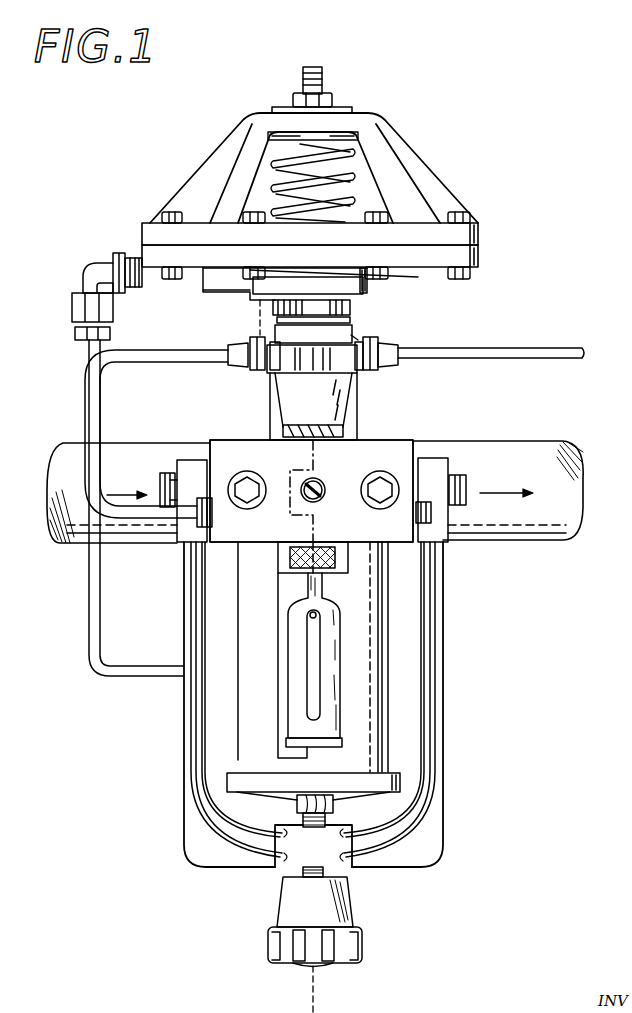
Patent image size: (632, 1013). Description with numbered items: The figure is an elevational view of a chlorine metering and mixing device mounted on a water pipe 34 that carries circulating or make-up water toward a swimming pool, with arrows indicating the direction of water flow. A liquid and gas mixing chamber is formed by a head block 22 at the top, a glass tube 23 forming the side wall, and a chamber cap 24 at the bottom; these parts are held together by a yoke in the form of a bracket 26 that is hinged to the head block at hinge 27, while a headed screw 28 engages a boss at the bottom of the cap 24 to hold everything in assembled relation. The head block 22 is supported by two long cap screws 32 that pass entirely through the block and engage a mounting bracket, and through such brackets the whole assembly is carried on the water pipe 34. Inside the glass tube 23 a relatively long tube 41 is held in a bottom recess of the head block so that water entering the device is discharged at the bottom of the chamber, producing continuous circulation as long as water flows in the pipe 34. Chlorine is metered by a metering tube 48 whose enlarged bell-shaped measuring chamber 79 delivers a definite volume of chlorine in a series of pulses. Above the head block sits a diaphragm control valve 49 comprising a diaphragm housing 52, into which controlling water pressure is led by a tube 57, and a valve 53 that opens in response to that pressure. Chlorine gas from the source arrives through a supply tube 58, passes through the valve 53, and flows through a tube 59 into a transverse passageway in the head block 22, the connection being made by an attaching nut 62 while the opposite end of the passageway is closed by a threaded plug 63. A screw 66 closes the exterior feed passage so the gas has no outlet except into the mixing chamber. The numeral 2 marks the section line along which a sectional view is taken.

The section line 2- 2 is at (257, 317).
The head block 22 is at (379, 438).
The glass tube 23 is at (392, 670).
The chamber cap 24 is at (362, 787).
The bracket 26 is at (437, 858).
The hinge 27 is at (164, 473).
The headed screw 28 is at (325, 868).
The cap screws 32 is at (250, 495).
The water pipe 34 is at (564, 510).
The long tube 41 is at (278, 760).
The metering tube 48 is at (288, 674).
The diaphragm control valve 49 is at (178, 190).
The diaphragm housing 52 is at (417, 277).
The valve 53 is at (356, 336).
The tube 57 is at (90, 348).
The supply tube 58 is at (524, 352).
The tube 59 is at (86, 388).
The attaching nut 62 is at (200, 520).
The threaded plug 63 is at (426, 504).
The screw 66 is at (316, 498).
The measuring chamber 79 is at (318, 733).